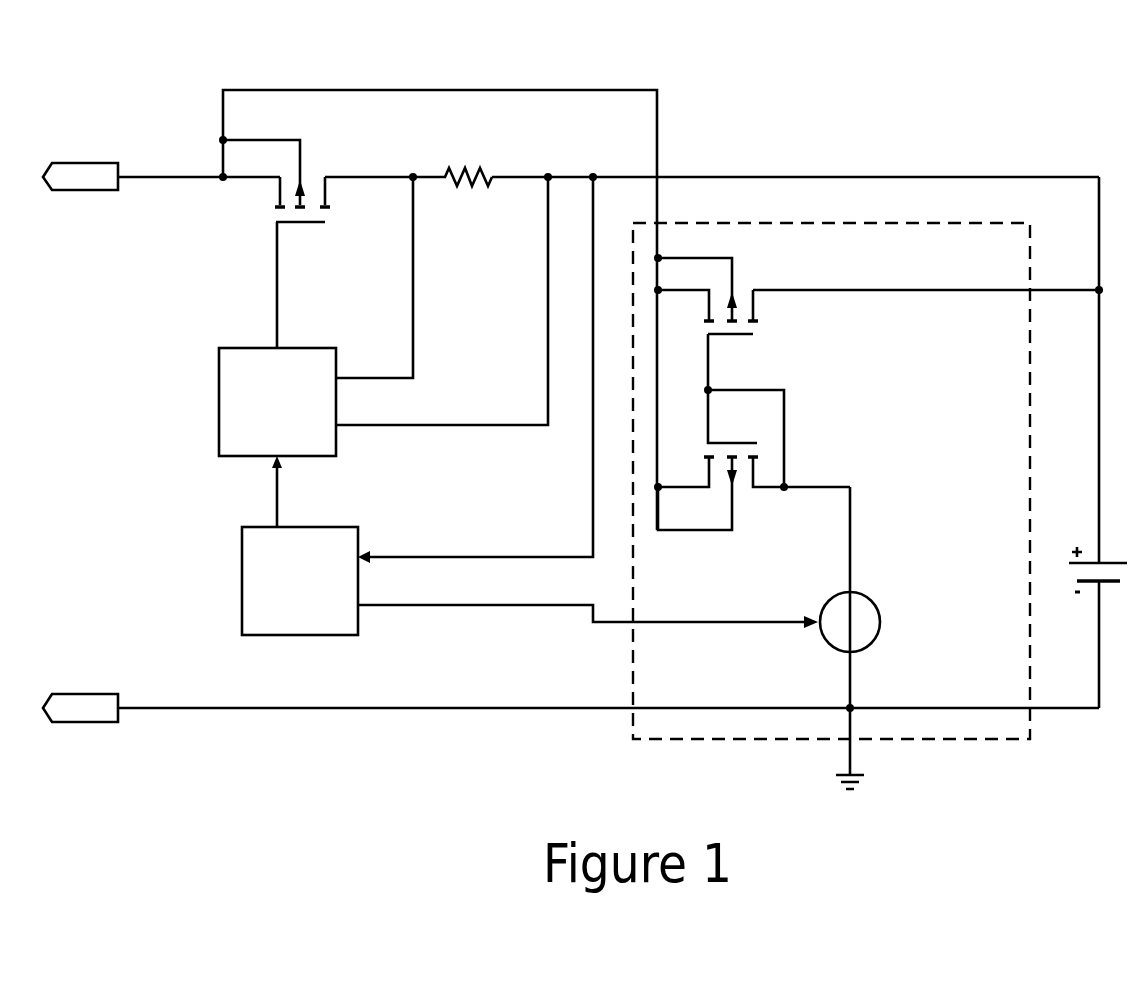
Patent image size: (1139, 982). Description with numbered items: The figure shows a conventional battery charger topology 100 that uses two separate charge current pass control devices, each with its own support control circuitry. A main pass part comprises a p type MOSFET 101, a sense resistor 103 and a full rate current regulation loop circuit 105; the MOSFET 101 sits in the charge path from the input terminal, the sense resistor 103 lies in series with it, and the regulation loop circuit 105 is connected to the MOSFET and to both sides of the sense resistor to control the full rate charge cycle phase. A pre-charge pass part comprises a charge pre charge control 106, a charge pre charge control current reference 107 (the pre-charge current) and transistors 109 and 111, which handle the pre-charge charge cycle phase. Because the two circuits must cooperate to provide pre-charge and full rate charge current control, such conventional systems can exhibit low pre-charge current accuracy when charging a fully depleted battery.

The battery charger topology 100 is at (562, 57).
The p type MOSFET 101 is at (275, 213).
The sense resistor 103 is at (465, 172).
The full rate current regulation loop circuit 105 is at (219, 388).
The charge pre charge control 106 is at (242, 580).
The charge pre charge control current reference 107 is at (872, 597).
The transistor 109 is at (753, 336).
The transistor 111 is at (745, 443).